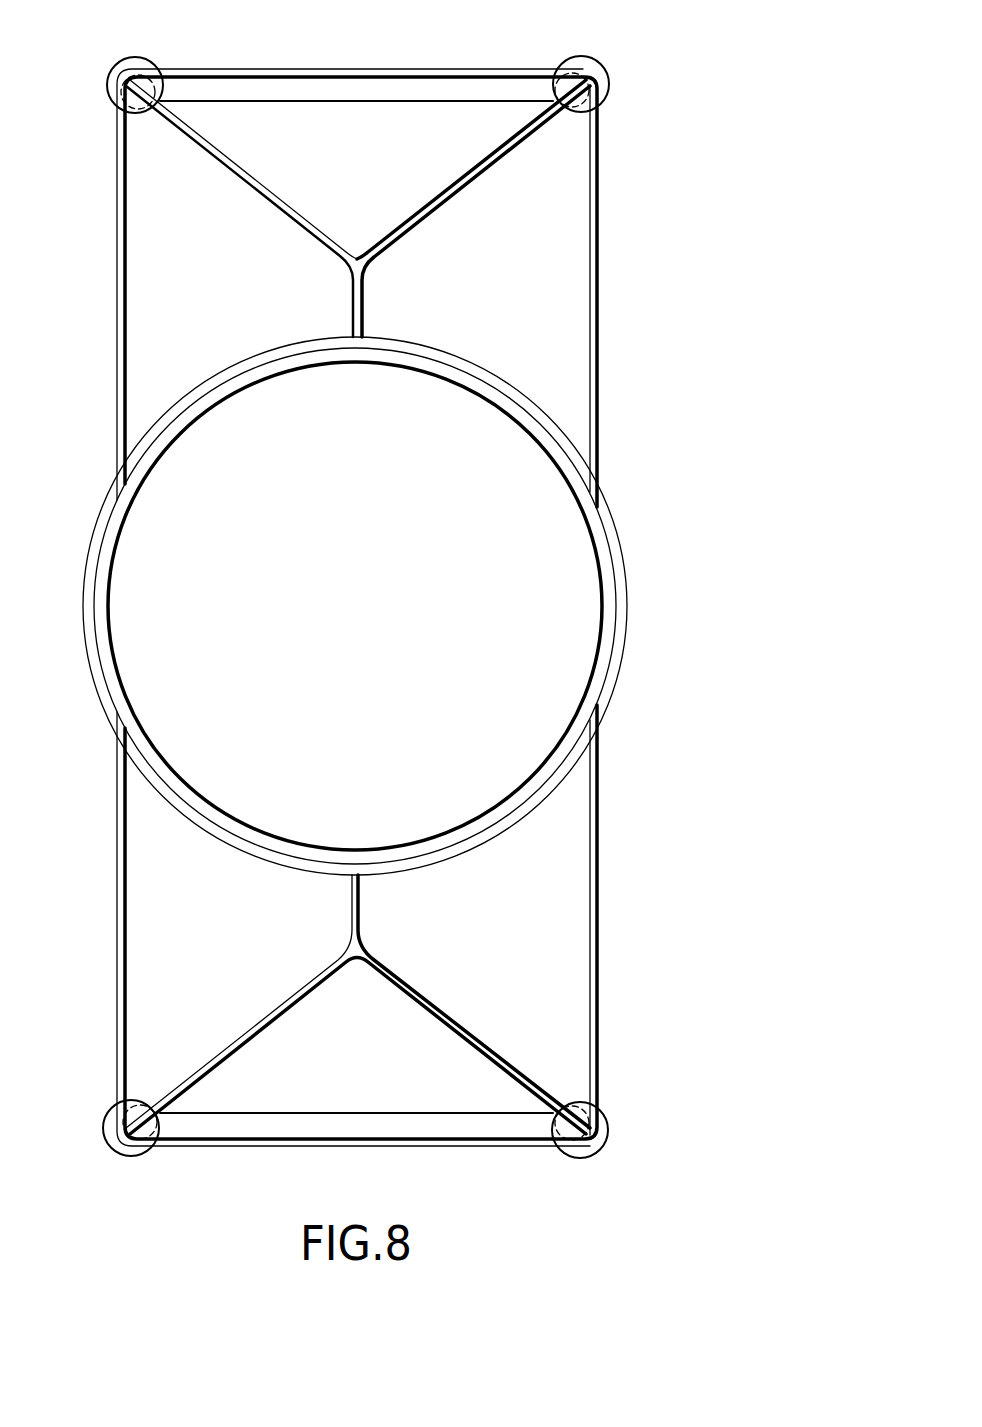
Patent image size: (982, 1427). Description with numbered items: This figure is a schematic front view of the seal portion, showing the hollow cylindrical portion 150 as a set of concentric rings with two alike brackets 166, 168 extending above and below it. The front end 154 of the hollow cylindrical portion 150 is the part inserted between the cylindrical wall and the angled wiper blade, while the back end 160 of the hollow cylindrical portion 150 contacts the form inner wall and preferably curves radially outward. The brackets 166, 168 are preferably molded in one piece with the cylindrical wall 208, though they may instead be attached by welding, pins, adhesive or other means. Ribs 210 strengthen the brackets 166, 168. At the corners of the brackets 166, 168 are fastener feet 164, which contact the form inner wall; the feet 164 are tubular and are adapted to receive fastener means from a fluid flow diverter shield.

The hollow cylindrical portion 150 is at (600, 119).
The front end 154 is at (598, 527).
The back end 160 is at (617, 659).
The fastener feet 164 is at (585, 62).
The bracket 166 is at (600, 165).
The bracket 168 is at (598, 938).
The cylindrical wall 208 is at (614, 588).
The ribs 210 is at (385, 69).